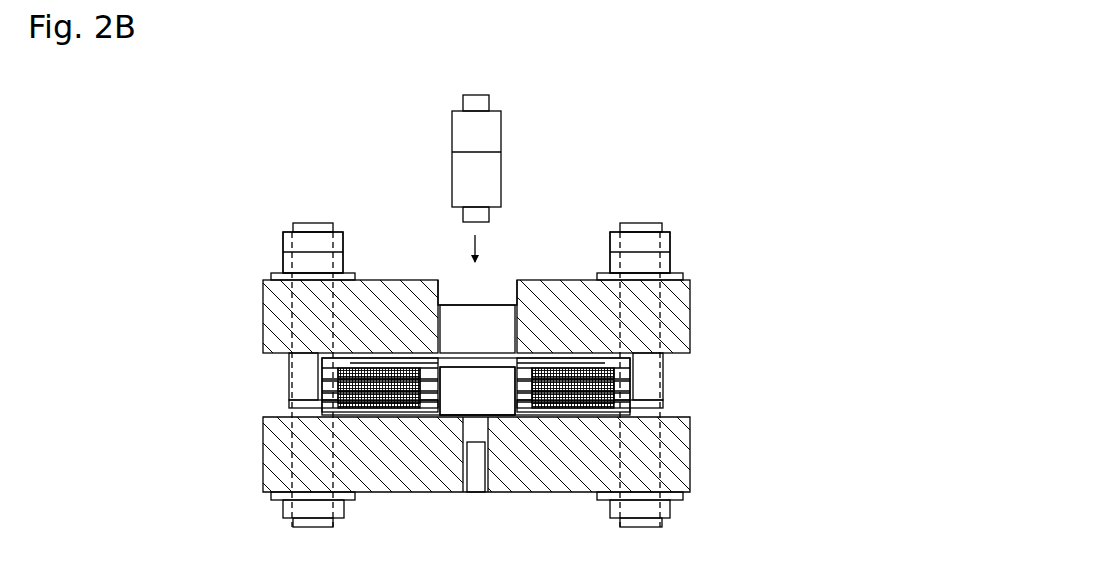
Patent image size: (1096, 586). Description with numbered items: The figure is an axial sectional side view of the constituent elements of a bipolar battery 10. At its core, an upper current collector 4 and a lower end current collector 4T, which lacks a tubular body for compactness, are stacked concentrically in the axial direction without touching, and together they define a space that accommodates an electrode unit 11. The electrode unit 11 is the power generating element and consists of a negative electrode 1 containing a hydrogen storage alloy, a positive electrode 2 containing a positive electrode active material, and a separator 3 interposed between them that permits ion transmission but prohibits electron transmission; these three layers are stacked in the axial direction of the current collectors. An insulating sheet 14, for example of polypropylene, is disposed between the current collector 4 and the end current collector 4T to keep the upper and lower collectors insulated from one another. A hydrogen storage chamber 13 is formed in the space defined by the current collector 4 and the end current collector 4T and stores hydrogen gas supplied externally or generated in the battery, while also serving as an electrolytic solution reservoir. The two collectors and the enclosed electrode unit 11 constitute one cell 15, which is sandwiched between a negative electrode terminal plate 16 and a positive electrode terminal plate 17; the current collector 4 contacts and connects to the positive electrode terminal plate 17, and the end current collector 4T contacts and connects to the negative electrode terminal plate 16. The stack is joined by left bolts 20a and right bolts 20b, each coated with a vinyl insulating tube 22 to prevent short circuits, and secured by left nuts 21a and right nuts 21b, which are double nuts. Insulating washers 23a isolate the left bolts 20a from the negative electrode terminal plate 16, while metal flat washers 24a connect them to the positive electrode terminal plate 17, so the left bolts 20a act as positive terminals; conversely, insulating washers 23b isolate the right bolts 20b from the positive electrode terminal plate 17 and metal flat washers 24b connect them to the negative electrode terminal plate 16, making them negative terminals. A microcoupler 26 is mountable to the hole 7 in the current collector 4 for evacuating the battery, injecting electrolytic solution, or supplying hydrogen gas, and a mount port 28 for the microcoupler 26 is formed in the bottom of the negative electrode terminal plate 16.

The negative electrode 1 is at (640, 367).
The positive electrode 2 is at (640, 382).
The separator 3 is at (640, 394).
The current collector 4 is at (440, 283).
The end current collector 4T is at (477, 391).
The hole 7 is at (480, 281).
The bipolar battery 10 is at (683, 152).
The electrode unit 11 is at (765, 360).
The hydrogen storage chamber 13 is at (496, 341).
The insulating sheet 14 is at (285, 407).
The cell 15 is at (884, 370).
The negative electrode terminal plate 16 is at (683, 453).
The positive electrode terminal plate 17 is at (683, 315).
The left bolt 20a is at (313, 228).
The right bolt 20b is at (641, 228).
The left nut 21a is at (288, 240).
The right nut 21b is at (665, 240).
The vinyl insulating tube 22 is at (288, 380).
The insulating washer 23a is at (272, 497).
The insulating washer 23b is at (682, 277).
The metal flat washer 24a is at (275, 277).
The metal flat washer 24b is at (686, 497).
The microcoupler 26 is at (508, 132).
The mount port 28 is at (478, 482).